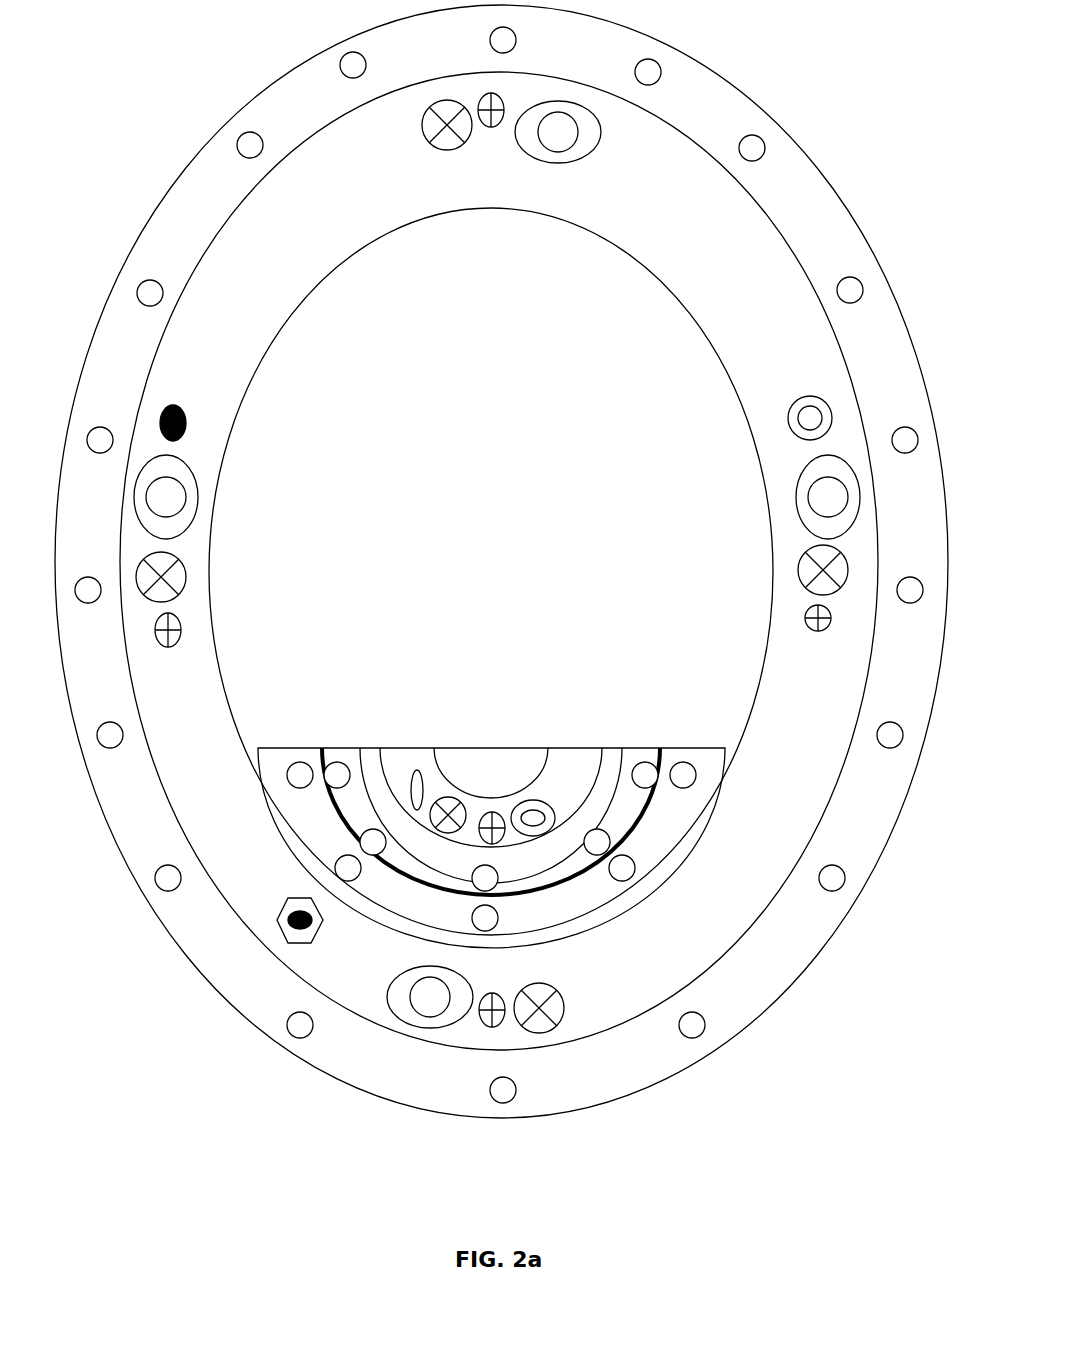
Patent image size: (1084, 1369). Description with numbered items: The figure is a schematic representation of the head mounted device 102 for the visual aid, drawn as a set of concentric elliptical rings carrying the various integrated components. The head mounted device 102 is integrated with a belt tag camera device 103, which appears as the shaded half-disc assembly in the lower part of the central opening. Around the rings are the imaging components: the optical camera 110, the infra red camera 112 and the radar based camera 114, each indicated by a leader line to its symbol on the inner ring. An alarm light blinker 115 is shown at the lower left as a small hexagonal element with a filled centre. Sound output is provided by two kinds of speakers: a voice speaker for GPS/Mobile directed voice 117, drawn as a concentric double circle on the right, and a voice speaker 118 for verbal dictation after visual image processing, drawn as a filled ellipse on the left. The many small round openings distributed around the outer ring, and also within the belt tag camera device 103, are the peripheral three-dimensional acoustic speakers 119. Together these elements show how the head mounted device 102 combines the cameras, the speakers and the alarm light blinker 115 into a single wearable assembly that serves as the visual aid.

The head mounted device 102 is at (797, 43).
The peripheral 3-d acoustic speakers 119 is at (768, 140).
The belt tag camera device 103 is at (343, 743).
The voice speaker 118 is at (187, 420).
The voice speaker for GPS/Mobile directed voice 117 is at (782, 422).
The optical camera 110 is at (795, 497).
The radar based camera 114 is at (797, 568).
The infra red camera 112 is at (182, 628).
The alarm light blinker 115 is at (277, 917).